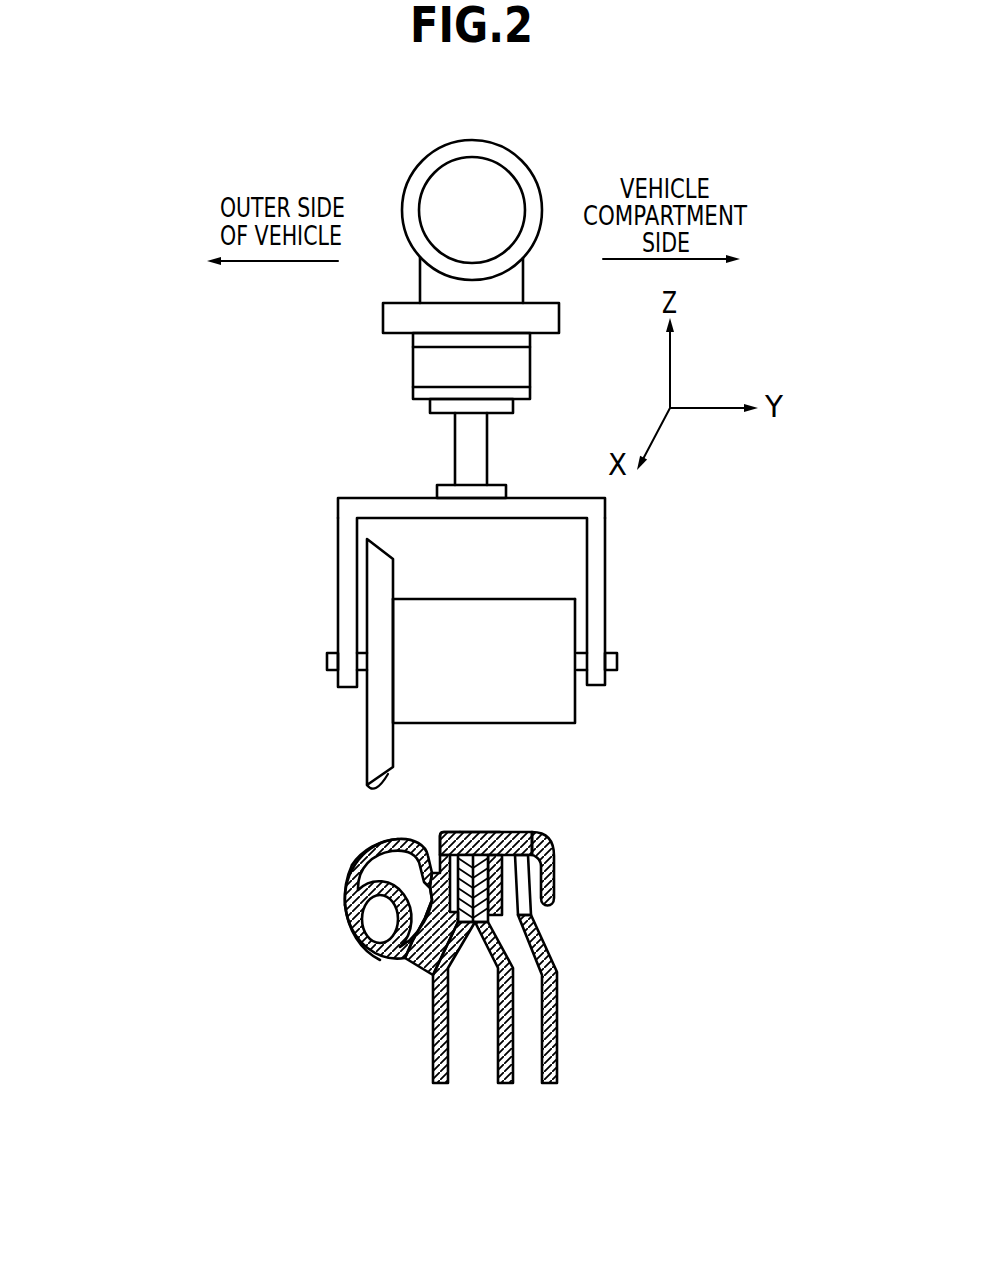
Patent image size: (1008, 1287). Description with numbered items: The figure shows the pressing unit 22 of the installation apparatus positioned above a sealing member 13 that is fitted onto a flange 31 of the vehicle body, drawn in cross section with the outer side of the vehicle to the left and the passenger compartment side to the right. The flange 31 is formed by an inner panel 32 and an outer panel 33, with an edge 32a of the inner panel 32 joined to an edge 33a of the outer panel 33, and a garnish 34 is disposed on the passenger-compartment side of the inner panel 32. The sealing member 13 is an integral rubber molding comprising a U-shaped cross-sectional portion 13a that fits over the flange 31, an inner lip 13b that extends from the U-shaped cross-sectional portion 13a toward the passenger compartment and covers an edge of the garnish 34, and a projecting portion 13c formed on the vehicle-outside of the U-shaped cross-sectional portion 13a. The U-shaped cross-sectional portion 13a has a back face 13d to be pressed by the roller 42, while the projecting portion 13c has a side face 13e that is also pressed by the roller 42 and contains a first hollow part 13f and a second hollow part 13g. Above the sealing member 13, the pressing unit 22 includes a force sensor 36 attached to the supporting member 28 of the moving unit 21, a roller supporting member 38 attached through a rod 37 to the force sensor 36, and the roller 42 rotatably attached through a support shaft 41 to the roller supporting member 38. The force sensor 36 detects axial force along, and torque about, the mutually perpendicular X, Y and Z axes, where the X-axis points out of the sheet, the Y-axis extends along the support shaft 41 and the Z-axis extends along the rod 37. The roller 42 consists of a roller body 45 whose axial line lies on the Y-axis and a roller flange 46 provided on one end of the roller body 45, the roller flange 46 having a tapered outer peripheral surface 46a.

The sealing member 13 is at (418, 963).
The U-shaped cross-sectional portion 13a is at (438, 837).
The inner lip 13b is at (554, 880).
The projecting portion 13c is at (340, 910).
The back face 13d is at (482, 832).
The side face 13e is at (345, 890).
The first hollow part 13f is at (357, 860).
The second hollow part 13g is at (357, 942).
The moving unit 21 is at (417, 160).
The pressing unit 22 is at (336, 545).
The supporting member 28 is at (510, 290).
The flange 31 is at (512, 842).
The inner panel 32 is at (513, 1055).
The edge of the inner panel 32a is at (505, 905).
The outer panel 33 is at (433, 1055).
The edge of the outer panel 33a is at (407, 950).
The garnish 34 is at (557, 1035).
The force sensor 36 is at (425, 368).
The rod 37 is at (460, 441).
The roller supporting member 38 is at (345, 503).
The support shaft 41 is at (327, 664).
The roller 42 is at (536, 596).
The roller body 45 is at (562, 710).
The roller flange 46 is at (366, 744).
The outer peripheral surface 46a is at (372, 795).